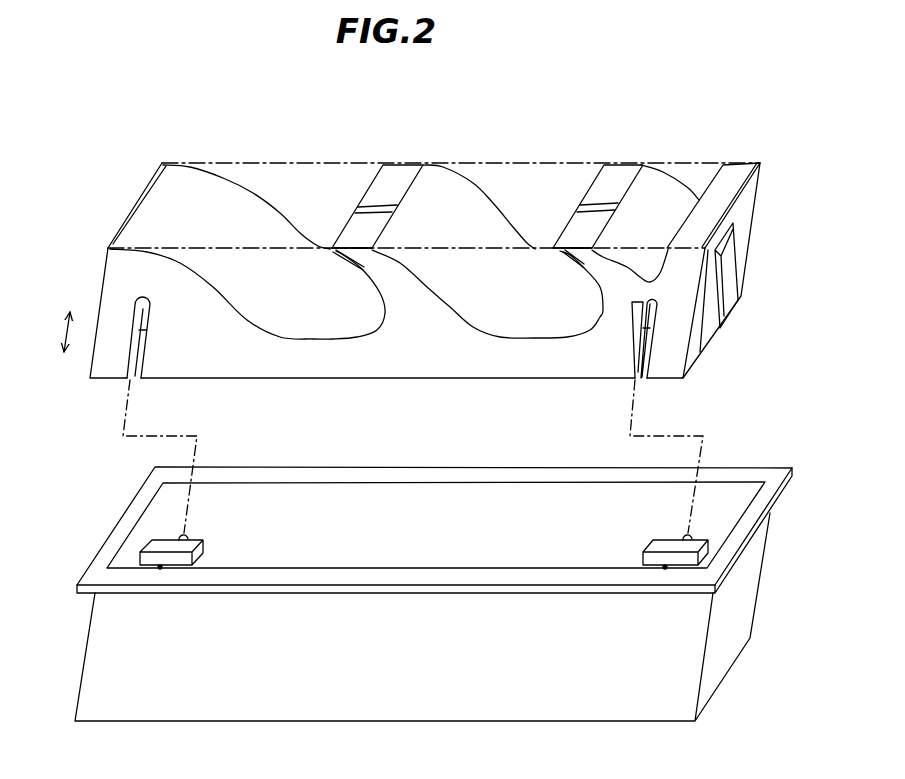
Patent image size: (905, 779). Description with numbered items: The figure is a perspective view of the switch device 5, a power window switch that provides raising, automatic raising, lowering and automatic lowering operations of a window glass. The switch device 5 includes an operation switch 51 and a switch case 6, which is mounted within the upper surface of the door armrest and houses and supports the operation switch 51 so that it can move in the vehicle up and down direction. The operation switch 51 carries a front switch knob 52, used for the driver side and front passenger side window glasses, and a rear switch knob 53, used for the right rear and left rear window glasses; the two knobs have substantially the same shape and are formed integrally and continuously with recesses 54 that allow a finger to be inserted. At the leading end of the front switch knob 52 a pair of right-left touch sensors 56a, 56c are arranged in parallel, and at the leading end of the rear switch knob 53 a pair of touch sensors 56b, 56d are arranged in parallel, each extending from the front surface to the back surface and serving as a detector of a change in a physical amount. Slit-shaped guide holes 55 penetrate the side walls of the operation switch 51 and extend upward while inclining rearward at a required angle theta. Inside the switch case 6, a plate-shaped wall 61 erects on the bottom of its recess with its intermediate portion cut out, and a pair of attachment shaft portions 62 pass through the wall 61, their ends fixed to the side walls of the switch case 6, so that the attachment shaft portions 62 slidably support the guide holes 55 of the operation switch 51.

The switch device 5 is at (404, 238).
The switch case 6 is at (433, 435).
The operation switch 51 is at (175, 183).
The front switch knob 52 is at (423, 202).
The rear switch knob 53 is at (647, 190).
The recess 54 is at (315, 322).
The guide hole 55 is at (127, 358).
The touch sensor 56a is at (390, 172).
The touch sensor 56b is at (605, 178).
The touch sensor 56c is at (357, 235).
The touch sensor 56d is at (572, 228).
The plate-shaped wall 61 is at (198, 540).
The attachment shaft portion 62 is at (180, 536).